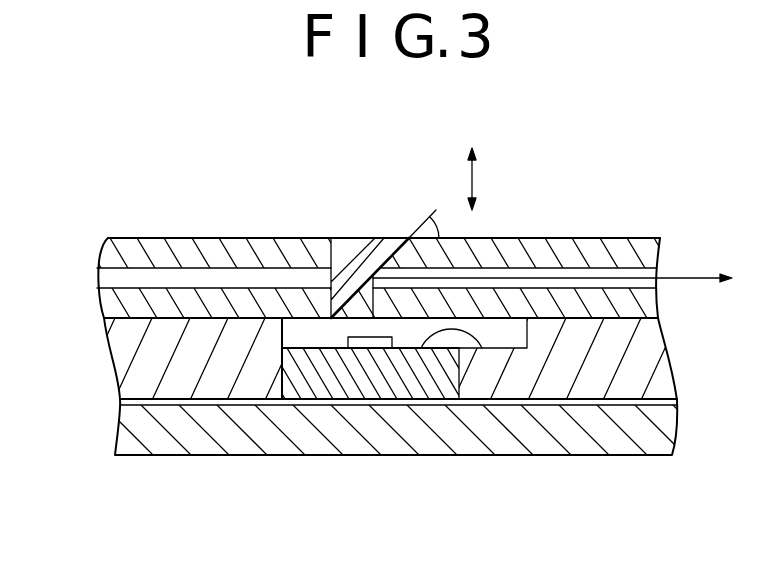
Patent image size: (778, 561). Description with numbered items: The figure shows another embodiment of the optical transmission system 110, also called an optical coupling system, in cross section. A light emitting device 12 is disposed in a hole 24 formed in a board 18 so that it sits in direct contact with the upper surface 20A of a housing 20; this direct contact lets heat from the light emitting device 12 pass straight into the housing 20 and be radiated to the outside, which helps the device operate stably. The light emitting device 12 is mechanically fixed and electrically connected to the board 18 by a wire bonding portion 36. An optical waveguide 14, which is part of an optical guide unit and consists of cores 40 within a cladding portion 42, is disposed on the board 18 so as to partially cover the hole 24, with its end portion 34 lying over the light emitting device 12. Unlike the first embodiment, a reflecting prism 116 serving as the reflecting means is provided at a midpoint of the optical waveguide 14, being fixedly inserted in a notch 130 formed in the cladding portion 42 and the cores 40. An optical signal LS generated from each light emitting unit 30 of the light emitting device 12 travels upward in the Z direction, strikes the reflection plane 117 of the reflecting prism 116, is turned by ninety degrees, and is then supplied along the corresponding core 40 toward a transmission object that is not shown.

The optical transmission system 110 is at (198, 161).
The notch 130 is at (323, 299).
The board 18 is at (397, 358).
The light emitting unit 30 is at (348, 336).
The hole 24 is at (282, 368).
The light emitting device 12 is at (418, 388).
The wire bonding portion 36 is at (482, 345).
The upper surface 20A is at (645, 398).
The housing 20 is at (394, 430).
The core 40 is at (647, 275).
The cladding portion 42 is at (378, 278).
The optical waveguide 14 is at (570, 231).
The end portion 34 is at (515, 223).
The reflecting prism 116 is at (346, 251).
The reflection plane 117 is at (385, 240).
The Z direction Z is at (472, 180).
The optical signal LS is at (683, 281).